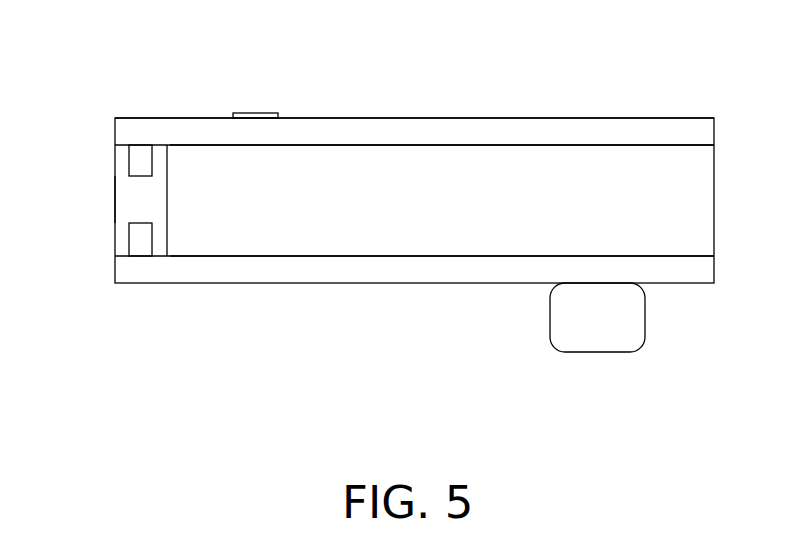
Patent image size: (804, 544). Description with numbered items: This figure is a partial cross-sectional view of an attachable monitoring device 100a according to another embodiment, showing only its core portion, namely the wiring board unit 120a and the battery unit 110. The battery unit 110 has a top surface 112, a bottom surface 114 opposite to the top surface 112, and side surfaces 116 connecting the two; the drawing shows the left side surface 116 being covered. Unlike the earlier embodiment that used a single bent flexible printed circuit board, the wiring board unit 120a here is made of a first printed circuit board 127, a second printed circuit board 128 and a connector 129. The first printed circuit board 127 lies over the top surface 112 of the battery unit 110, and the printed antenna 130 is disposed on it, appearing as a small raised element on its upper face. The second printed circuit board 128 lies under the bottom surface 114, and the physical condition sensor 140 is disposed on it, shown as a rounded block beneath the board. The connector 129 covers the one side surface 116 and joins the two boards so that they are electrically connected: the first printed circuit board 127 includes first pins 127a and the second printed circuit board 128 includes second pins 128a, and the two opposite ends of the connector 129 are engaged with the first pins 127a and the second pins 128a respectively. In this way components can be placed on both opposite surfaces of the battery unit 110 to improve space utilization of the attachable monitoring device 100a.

The attachable monitoring device 100a is at (765, 472).
The battery unit 110 is at (698, 205).
The top surface 112 is at (362, 143).
The bottom surface 114 is at (361, 256).
The side surface 116 is at (170, 197).
The wiring board unit 120a is at (588, 118).
The first printed circuit board 127 is at (487, 133).
The first pins 127a is at (128, 160).
The second printed circuit board 128 is at (487, 268).
The second pins 128a is at (129, 238).
The connector 129 is at (123, 195).
The printed antenna 130 is at (258, 113).
The physical condition sensor 140 is at (633, 330).